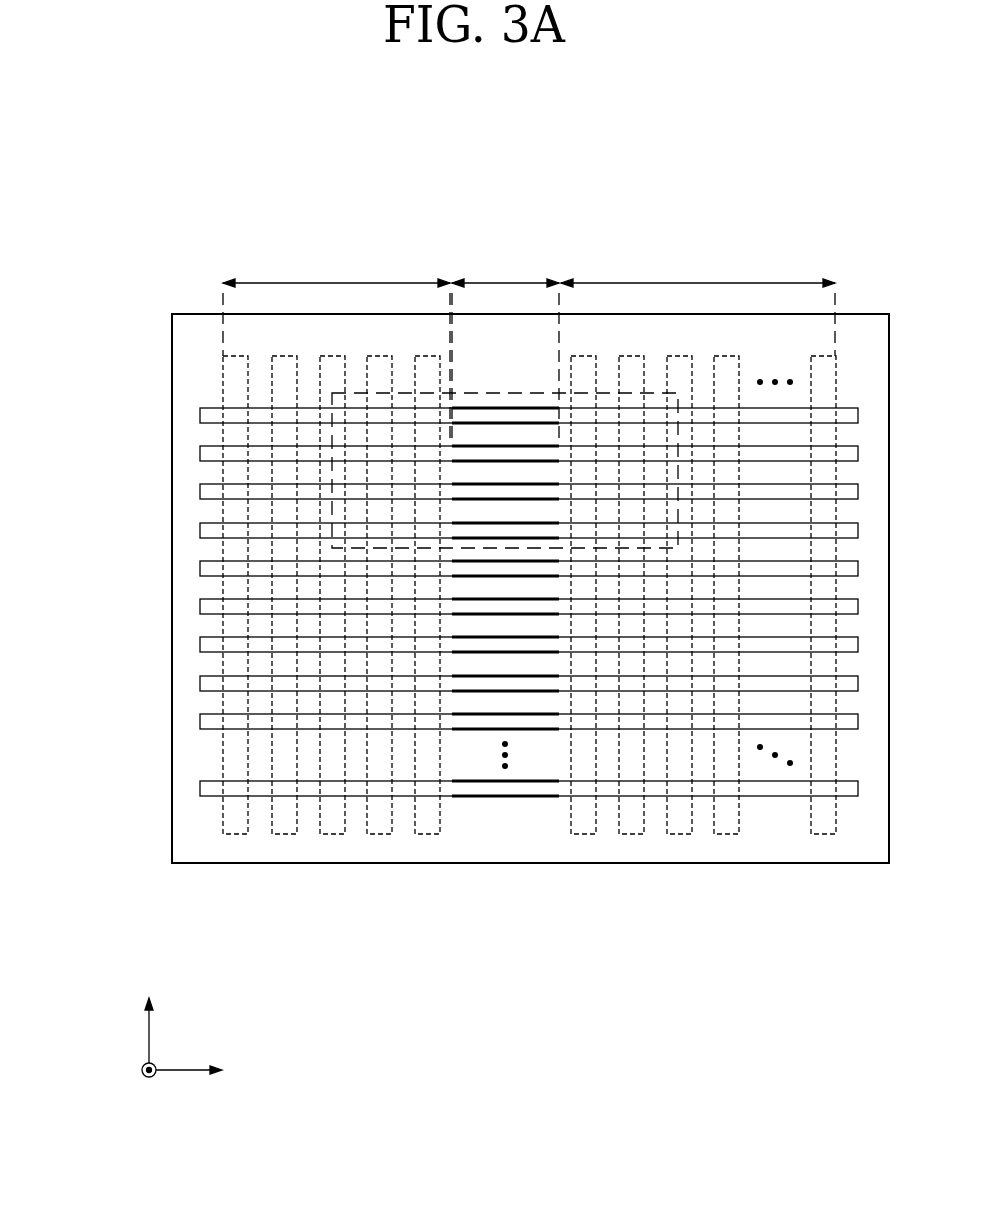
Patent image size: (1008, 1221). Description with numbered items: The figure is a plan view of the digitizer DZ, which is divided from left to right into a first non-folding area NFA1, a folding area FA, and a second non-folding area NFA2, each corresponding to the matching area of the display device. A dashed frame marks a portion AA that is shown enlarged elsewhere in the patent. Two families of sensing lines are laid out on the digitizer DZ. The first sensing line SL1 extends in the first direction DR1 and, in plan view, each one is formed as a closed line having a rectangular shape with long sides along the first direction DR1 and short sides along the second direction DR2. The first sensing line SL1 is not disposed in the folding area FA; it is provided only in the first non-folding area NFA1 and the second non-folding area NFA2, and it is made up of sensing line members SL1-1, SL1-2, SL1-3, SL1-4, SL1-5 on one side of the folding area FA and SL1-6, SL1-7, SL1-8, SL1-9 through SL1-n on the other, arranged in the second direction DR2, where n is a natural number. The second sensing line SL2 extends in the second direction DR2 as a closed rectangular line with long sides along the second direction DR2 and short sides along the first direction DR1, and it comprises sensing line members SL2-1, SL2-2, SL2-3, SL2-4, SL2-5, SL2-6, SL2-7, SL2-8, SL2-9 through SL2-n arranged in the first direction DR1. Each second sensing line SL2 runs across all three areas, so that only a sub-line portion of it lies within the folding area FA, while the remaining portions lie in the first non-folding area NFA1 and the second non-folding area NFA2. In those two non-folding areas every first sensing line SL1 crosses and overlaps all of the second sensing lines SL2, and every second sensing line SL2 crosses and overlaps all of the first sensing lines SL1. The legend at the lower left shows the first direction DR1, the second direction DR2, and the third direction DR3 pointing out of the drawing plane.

The digitizer DZ is at (877, 264).
The first non-folding area NFA1 is at (336, 345).
The folding area FA is at (505, 345).
The second non-folding area NFA2 is at (698, 303).
The portion AA is at (518, 391).
The first sensing line SL1 is at (534, 674).
The first sensing line member SL1-1 is at (236, 834).
The second sensing line member SL1-2 is at (285, 834).
The third sensing line member SL1-3 is at (333, 834).
The fourth sensing line member SL1-4 is at (380, 834).
The fifth sensing line member SL1-5 is at (428, 834).
The sixth sensing line member SL1-6 is at (584, 834).
The seventh sensing line member SL1-7 is at (632, 834).
The eighth sensing line member SL1-8 is at (680, 834).
The ninth sensing line member SL1-9 is at (727, 834).
The n-th sensing line member SL1-n is at (826, 637).
The second sensing line SL2 is at (431, 601).
The first sensing line member SL2-1 is at (200, 416).
The second sensing line member SL2-2 is at (200, 454).
The third sensing line member SL2-3 is at (200, 492).
The fourth sensing line member SL2-4 is at (200, 531).
The fifth sensing line member SL2-5 is at (200, 569).
The sixth sensing line member SL2-6 is at (200, 607).
The seventh sensing line member SL2-7 is at (200, 645).
The eighth sensing line member SL2-8 is at (200, 684).
The ninth sensing line member SL2-9 is at (200, 722).
The n-th sensing line member SL2-n is at (465, 788).
The first direction DR1 is at (150, 1017).
The second direction DR2 is at (210, 1070).
The third direction DR3 is at (150, 1086).